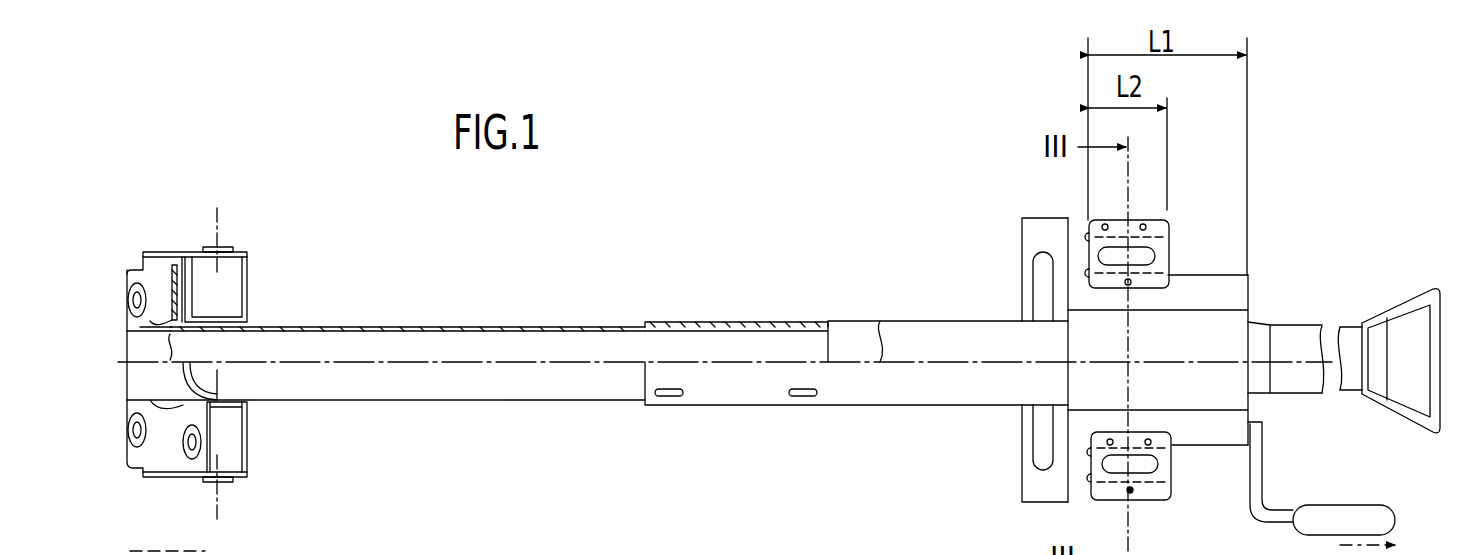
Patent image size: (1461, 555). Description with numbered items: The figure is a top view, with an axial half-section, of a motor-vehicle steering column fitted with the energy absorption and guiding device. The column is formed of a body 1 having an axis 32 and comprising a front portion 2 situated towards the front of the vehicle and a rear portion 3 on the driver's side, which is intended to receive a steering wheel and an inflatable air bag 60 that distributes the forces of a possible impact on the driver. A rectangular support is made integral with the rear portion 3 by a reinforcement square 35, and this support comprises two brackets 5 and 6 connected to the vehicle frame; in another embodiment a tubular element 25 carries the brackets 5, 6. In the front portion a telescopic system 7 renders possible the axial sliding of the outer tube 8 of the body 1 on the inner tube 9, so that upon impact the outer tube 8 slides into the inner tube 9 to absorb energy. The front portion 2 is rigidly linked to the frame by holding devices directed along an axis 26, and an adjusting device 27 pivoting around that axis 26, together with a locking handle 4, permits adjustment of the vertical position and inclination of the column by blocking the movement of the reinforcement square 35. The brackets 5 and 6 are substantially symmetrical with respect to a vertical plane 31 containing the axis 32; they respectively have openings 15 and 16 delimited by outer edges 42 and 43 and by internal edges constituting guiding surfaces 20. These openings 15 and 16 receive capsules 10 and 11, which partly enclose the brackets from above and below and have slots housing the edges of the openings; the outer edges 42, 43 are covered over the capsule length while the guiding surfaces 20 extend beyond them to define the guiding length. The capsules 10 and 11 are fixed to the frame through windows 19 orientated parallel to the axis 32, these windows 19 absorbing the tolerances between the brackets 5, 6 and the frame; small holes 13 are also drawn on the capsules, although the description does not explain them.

The body 1 is at (907, 321).
The front portion 2 is at (514, 316).
The rear portion 3 is at (1269, 317).
The locking handle 4 is at (1327, 518).
The bracket 5 is at (1025, 240).
The bracket 6 is at (1022, 488).
The telescopic system 7 is at (702, 322).
The outer tube 8 is at (737, 406).
The inner tube 9 is at (575, 401).
The capsule 10 is at (1160, 258).
The capsule 11 is at (1168, 474).
The fastening holes 13 is at (1106, 224).
The opening 15 is at (1158, 240).
The opening 16 is at (1172, 458).
The window 19 is at (1115, 266).
The guiding surface 20 is at (1232, 273).
The tubular element 25 is at (1022, 433).
The axis 26 is at (224, 222).
The adjusting device 27 is at (166, 457).
The vertical plane 31 is at (466, 361).
The axis 32 is at (406, 361).
The reinforcement square 35 is at (1230, 395).
The outer edge 42 is at (1150, 221).
The outer edge 43 is at (1154, 500).
The inflatable air bag 60 is at (1378, 335).